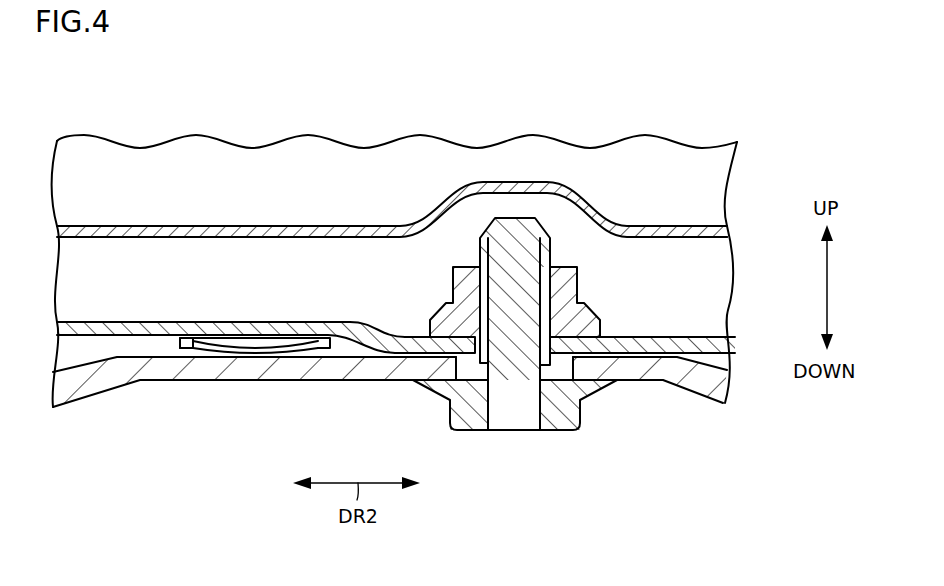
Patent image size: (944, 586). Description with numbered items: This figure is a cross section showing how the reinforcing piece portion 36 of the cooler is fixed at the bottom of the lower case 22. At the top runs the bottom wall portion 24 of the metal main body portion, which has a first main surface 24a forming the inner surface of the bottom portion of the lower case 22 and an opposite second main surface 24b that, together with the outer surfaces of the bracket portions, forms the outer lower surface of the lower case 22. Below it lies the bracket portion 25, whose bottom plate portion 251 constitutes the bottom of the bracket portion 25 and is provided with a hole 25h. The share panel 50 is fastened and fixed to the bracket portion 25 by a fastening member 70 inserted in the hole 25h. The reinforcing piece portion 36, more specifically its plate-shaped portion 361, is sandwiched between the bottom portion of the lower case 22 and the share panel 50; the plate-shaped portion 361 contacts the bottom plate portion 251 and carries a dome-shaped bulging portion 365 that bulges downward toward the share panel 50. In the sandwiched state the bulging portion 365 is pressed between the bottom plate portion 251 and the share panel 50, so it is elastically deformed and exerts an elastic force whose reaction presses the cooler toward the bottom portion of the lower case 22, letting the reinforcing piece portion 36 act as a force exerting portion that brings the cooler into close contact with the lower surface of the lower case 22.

The lower case 22 is at (428, 260).
The bottom wall portion 24 is at (308, 226).
The first main surface 24a is at (727, 226).
The second main surface 24b is at (728, 238).
The bracket portion 25 is at (143, 325).
The bottom plate portion 251 is at (727, 345).
The hole 25h is at (490, 368).
The reinforcing piece portion 36 is at (253, 394).
The plate-shaped portion 361 is at (193, 346).
The bulging portion 365 is at (257, 346).
The share panel 50 is at (717, 387).
The fastening member 70 is at (531, 430).